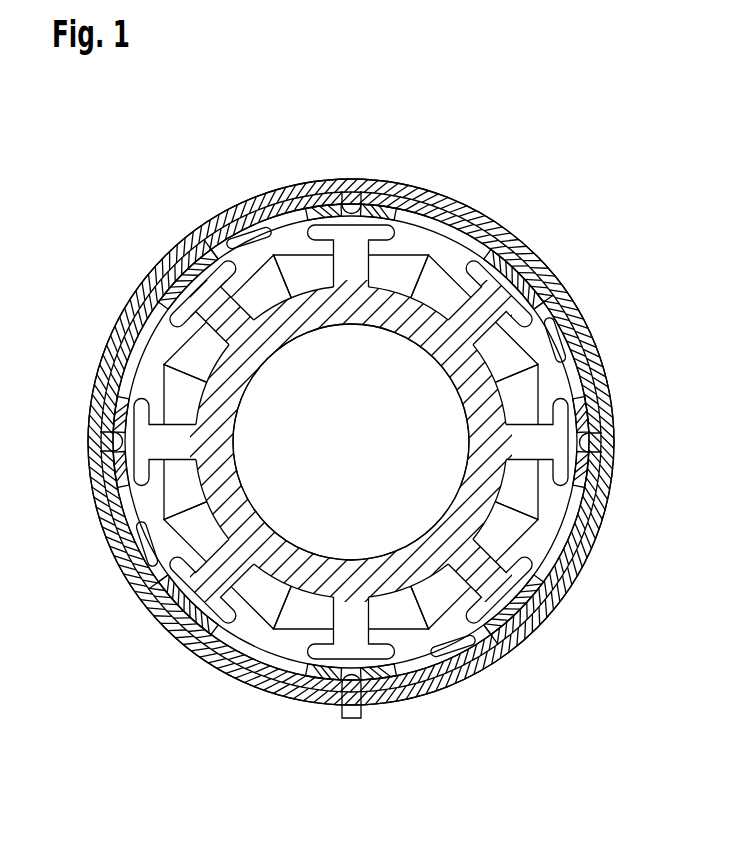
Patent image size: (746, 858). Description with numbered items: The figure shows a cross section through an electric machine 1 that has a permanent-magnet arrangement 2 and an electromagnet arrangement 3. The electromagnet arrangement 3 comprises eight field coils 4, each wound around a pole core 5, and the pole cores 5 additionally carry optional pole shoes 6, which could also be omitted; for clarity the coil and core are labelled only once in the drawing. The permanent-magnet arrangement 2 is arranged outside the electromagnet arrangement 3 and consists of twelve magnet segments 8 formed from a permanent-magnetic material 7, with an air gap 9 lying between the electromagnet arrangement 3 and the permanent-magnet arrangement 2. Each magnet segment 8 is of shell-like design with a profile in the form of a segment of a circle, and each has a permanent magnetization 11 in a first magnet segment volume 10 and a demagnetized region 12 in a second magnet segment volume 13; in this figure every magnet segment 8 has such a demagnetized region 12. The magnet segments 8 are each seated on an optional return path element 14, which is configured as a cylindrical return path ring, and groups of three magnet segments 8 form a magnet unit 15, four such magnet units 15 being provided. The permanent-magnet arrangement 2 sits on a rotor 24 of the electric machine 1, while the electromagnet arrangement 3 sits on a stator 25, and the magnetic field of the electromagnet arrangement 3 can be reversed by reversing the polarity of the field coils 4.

The electric machine 1 is at (128, 151).
The permanent-magnet arrangement 2 is at (470, 200).
The electromagnet arrangement 3 is at (458, 393).
The field coil 4 is at (312, 276).
The pole core 5 is at (230, 323).
The pole shoe 6 is at (398, 200).
The permanent-magnetic material 7 is at (556, 314).
The magnet segment 8 is at (294, 203).
The air gap 9 is at (328, 195).
The first magnet segment volume 10 is at (350, 443).
The permanent magnetization 11 is at (260, 208).
The demagnetized region 12 is at (352, 446).
The second magnet segment volume 13 is at (362, 200).
The return path element 14 is at (598, 366).
The magnet unit 15 is at (552, 305).
The rotor 24 is at (602, 494).
The stator 25 is at (440, 527).